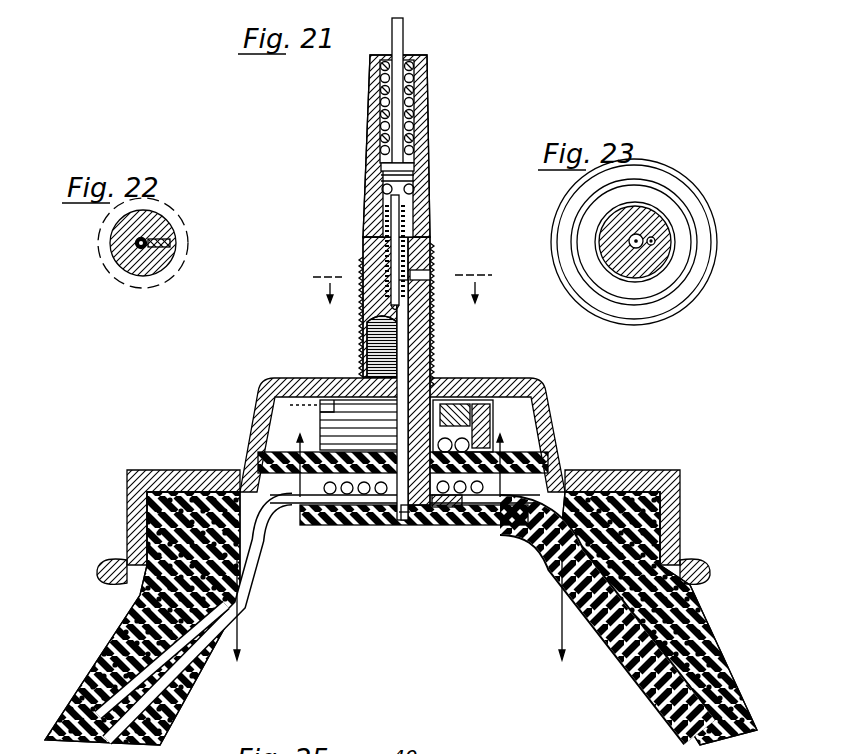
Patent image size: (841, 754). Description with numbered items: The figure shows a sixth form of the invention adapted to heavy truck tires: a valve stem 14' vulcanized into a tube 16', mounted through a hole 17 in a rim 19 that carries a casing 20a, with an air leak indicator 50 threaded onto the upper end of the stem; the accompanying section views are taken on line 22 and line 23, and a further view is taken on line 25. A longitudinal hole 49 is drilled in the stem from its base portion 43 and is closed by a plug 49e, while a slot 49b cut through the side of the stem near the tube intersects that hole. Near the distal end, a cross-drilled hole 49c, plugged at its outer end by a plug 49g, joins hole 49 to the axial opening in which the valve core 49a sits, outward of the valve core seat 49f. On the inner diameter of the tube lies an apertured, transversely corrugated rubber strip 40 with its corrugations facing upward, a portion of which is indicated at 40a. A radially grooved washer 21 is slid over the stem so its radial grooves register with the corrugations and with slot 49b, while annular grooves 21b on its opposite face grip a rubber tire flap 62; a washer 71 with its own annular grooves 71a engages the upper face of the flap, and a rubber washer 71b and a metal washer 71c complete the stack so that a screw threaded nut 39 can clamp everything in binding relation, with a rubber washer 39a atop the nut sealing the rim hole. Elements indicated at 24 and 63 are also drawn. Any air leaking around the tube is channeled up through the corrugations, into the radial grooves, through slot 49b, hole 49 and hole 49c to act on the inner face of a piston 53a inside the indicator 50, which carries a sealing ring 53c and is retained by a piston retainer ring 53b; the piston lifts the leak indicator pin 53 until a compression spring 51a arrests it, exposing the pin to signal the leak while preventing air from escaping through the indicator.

In FIG. 21, the leak indicator pin 53 is at (403, 36).
In FIG. 21, the compression spring 51a is at (418, 81).
In FIG. 21, the air leak indicator 50 is at (432, 101).
In FIG. 21, the piston 53a is at (414, 167).
In FIG. 21, the sealing ring 53c is at (414, 178).
In FIG. 21, the piston retainer ring 53b is at (414, 191).
In FIG. 21, the valve core 49a is at (404, 217).
In FIG. 22, the valve core 49a is at (140, 255).
In FIG. 21, the cross-drilled hole 49c is at (430, 262).
In FIG. 21, the plug 49g is at (426, 276).
In FIG. 22, the plug 49g is at (172, 245).
In FIG. 21, the section line 22— 22 is at (399, 283).
In FIG. 21, the longitudinal hole 49 is at (427, 312).
In FIG. 23, the longitudinal hole 49 is at (652, 246).
In FIG. 21, the valve stem 14' is at (416, 371).
In FIG. 22, the valve stem 14' is at (163, 254).
In FIG. 23, the valve stem 14' is at (642, 272).
In FIG. 21, the valve core seat 49f is at (372, 322).
In FIG. 21, the screw threaded nut 39 is at (318, 420).
In FIG. 21, the rubber washer 39a is at (338, 398).
In FIG. 21, the hole 17 is at (440, 386).
In FIG. 21, the metal washer 71c is at (462, 440).
In FIG. 21, the rubber washer 71b is at (487, 420).
In FIG. 21, the washer 71 is at (498, 445).
In FIG. 23, the washer 71 is at (713, 211).
In FIG. 21, the rim 19 is at (548, 418).
In FIG. 22, the rim 19 is at (160, 283).
In FIG. 21, the tire flap 62 is at (545, 462).
In FIG. 21, the section line 24 is at (405, 454).
In FIG. 21, the section line 23— 23 is at (205, 434).
In FIG. 21, the radially grooved washer 21 is at (348, 506).
In FIG. 21, the corrugated rubber strip 40 is at (303, 538).
In FIG. 21, the band portion 40a is at (276, 578).
In FIG. 21, the plug 49e is at (409, 522).
In FIG. 21, the slot 49b is at (425, 525).
In FIG. 21, the base portion 43 is at (445, 512).
In FIG. 21, the spring 63 is at (467, 505).
In FIG. 21, the annular grooves 21b is at (453, 508).
In FIG. 21, the tube 16' is at (599, 623).
In FIG. 21, the section line 25— 25 is at (401, 628).
In FIG. 21, the casing 20a is at (722, 640).
In FIG. 23, the annular grooves 71a is at (702, 248).